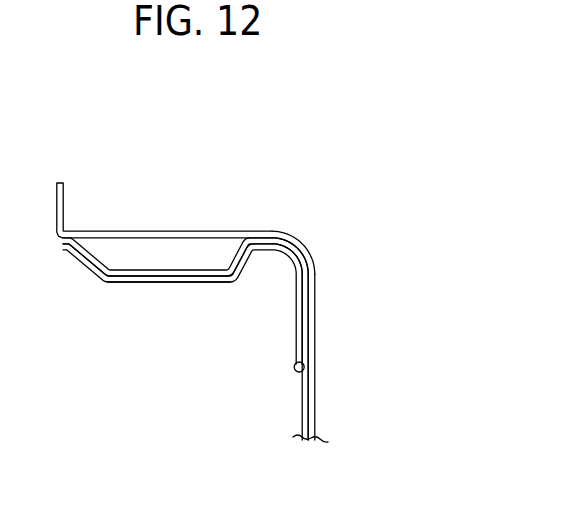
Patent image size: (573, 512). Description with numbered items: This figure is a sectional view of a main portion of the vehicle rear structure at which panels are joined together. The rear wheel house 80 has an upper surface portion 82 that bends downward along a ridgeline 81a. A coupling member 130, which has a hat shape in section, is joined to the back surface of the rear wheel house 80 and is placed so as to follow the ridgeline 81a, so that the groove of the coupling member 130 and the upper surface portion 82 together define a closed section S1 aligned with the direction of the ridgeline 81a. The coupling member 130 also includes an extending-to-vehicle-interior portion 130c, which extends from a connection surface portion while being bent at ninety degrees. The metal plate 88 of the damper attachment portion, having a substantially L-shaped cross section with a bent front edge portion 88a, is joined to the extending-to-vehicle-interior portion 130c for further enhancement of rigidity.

The rear wheel house 80 is at (313, 398).
The upper surface portion 82 is at (122, 231).
The ridgeline 81a is at (300, 244).
The metal plate 88 is at (88, 263).
The front edge portion 88a is at (172, 283).
The coupling member 130 is at (181, 270).
The extending-to-vehicle-interior portion 130c is at (307, 370).
The closed section S1 is at (150, 256).